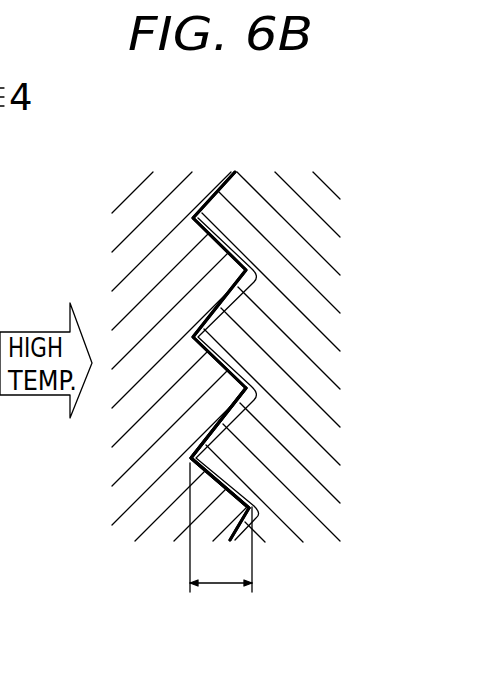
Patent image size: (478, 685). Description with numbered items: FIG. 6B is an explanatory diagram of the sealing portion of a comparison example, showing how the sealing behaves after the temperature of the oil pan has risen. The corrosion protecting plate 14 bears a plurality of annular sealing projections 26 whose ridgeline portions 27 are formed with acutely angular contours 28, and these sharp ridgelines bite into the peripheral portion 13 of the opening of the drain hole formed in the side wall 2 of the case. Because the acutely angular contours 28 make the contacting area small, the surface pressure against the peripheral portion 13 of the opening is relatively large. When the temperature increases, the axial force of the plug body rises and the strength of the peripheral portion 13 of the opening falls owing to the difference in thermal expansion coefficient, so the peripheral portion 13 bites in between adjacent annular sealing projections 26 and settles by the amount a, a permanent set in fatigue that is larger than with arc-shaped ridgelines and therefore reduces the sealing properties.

The corrosion protecting plate 14 is at (300, 173).
The side wall 2 is at (132, 436).
The ridgeline portions 27 is at (197, 207).
The annular sealing projections 26 is at (186, 222).
The acutely angular contours 28 is at (203, 243).
The peripheral portion of the opening 13 is at (193, 463).
The dimension a is at (217, 587).